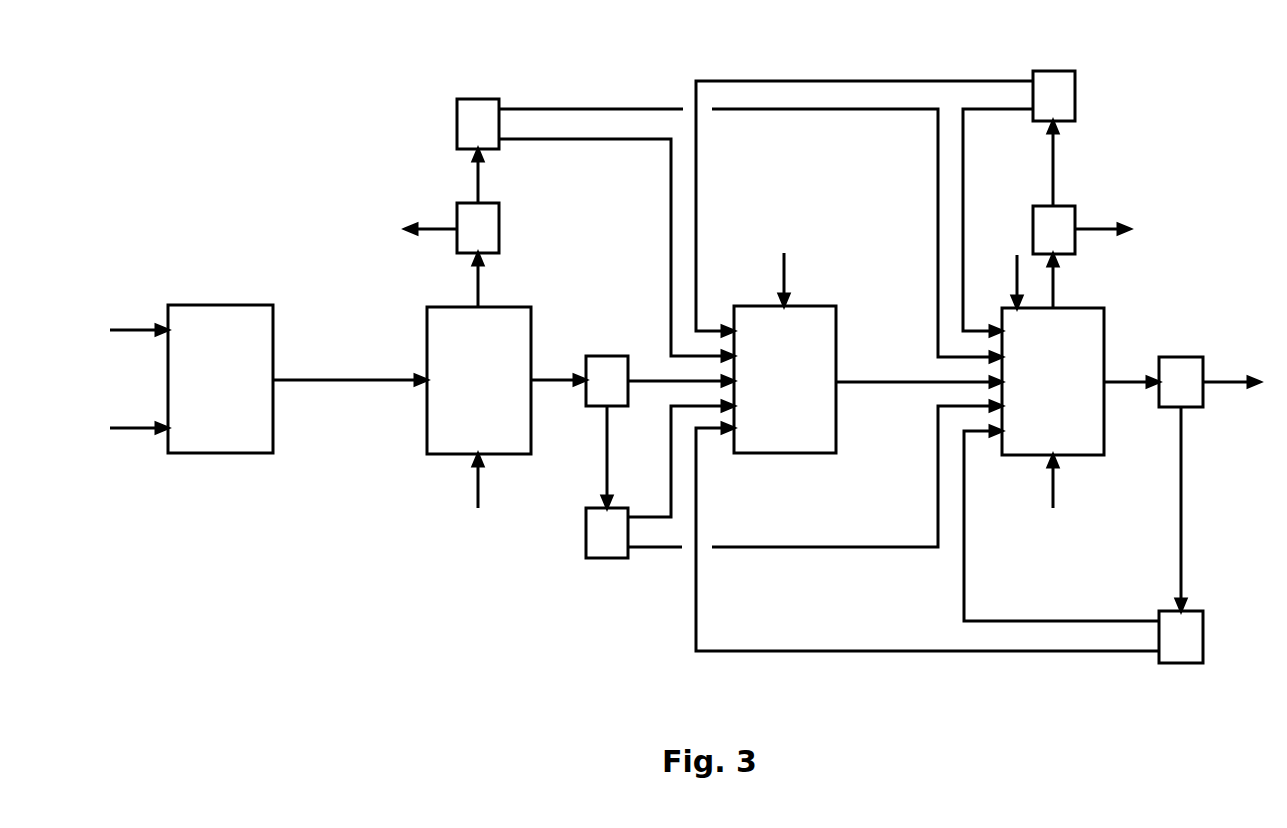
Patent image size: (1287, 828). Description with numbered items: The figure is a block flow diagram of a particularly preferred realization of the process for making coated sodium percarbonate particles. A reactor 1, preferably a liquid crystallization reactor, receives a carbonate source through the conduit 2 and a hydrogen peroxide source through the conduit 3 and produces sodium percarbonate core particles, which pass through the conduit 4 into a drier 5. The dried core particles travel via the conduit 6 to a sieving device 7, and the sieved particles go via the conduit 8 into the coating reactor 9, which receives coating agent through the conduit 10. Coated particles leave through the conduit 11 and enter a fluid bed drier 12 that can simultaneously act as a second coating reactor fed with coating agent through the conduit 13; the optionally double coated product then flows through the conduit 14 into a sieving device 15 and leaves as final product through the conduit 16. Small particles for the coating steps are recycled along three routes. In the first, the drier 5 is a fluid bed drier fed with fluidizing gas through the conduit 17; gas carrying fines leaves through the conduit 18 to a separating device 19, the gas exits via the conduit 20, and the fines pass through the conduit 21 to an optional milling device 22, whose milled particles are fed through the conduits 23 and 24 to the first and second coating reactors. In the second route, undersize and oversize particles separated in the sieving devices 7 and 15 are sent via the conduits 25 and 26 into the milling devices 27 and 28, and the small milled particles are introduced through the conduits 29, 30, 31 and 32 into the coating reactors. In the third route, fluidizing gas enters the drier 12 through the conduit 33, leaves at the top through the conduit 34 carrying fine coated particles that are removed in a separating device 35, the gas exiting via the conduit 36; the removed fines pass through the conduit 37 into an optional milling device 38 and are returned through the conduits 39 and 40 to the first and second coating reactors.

The reactor 1 is at (220, 379).
The conduit 2 is at (128, 330).
The conduit 3 is at (128, 428).
The conduit 4 is at (348, 380).
The drier 5 is at (479, 380).
The conduit 6 is at (551, 380).
The sieving device 7 is at (607, 381).
The conduit 8 is at (648, 381).
The coating reactor 9 is at (785, 379).
The conduit 10 is at (784, 273).
The conduit 11 is at (887, 382).
The fluid bed drier 12 is at (1053, 381).
The conduit 13 is at (1017, 278).
The conduit 14 is at (1125, 382).
The sieving device 15 is at (1181, 382).
The conduit 16 is at (1223, 382).
The conduit 17 is at (478, 493).
The conduit 18 is at (478, 285).
The separating device 19 is at (478, 228).
The conduit 20 is at (432, 229).
The conduit 21 is at (478, 182).
The milling device 22 is at (478, 124).
The conduit 23 is at (583, 139).
The conduit 24 is at (583, 109).
The conduit 25 is at (607, 435).
The conduit 26 is at (1181, 512).
The milling device 27 is at (607, 533).
The milling device 28 is at (1181, 637).
The conduit 29 is at (671, 478).
The conduit 30 is at (830, 547).
The conduit 31 is at (915, 651).
The conduit 32 is at (1090, 621).
The conduit 33 is at (1053, 495).
The conduit 34 is at (1053, 285).
The separating device 35 is at (1054, 230).
The conduit 36 is at (1097, 229).
The conduit 37 is at (1053, 170).
The milling device 38 is at (1054, 96).
The conduit 39 is at (830, 81).
The conduit 40 is at (963, 170).